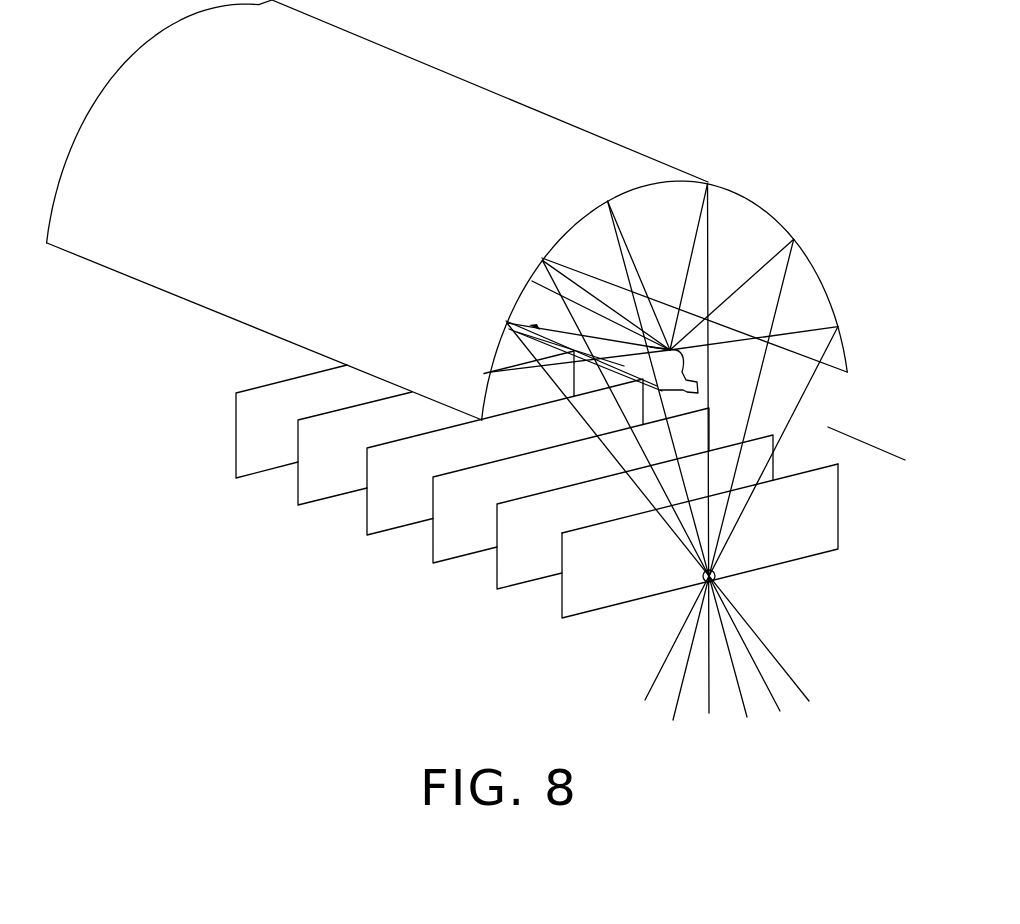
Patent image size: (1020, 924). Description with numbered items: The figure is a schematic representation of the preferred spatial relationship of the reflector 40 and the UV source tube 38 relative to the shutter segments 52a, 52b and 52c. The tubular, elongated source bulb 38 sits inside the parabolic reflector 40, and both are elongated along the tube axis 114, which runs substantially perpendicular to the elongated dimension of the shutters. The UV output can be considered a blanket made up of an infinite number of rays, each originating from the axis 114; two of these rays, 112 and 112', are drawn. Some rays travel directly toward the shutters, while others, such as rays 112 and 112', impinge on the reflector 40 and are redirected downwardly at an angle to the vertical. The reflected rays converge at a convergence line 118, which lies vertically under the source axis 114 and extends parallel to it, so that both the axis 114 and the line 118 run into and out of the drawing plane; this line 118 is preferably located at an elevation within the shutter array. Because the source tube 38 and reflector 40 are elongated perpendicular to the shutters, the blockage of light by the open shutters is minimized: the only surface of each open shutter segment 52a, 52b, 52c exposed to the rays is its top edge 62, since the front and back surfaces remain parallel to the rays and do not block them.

The reflector 40 is at (648, 147).
The UV source tube 38 is at (662, 342).
The UV ray 112 is at (574, 306).
The UV ray 112' is at (744, 336).
The axis 114 is at (887, 453).
The convergence line 118 is at (756, 586).
The top edge 62 is at (567, 531).
The shutter segment 52a is at (560, 622).
The shutter segment 52b is at (491, 591).
The shutter segment 52c is at (426, 562).